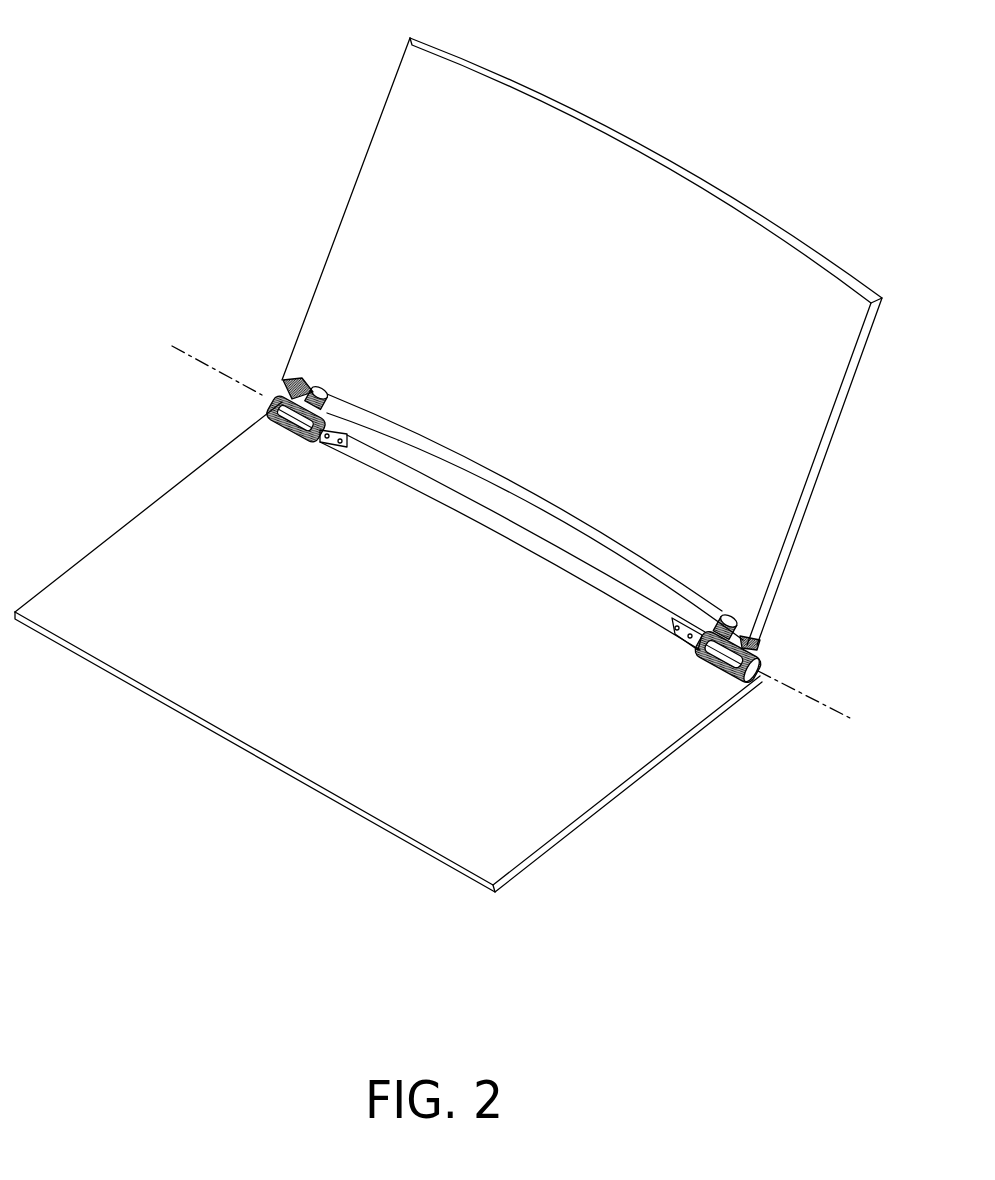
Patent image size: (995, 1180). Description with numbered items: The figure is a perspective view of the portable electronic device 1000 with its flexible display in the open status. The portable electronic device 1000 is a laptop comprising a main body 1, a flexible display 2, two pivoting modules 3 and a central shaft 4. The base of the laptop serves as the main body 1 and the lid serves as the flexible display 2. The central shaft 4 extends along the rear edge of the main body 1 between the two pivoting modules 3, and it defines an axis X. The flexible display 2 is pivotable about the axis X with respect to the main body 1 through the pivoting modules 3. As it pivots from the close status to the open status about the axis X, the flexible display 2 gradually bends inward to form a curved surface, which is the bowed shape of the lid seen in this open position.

The portable electronic device 1000 is at (448, 465).
The main body 1 is at (644, 772).
The flexible display 2 is at (624, 112).
The pivoting module 3 is at (292, 383).
The central shaft 4 is at (628, 570).
The axis X is at (828, 710).